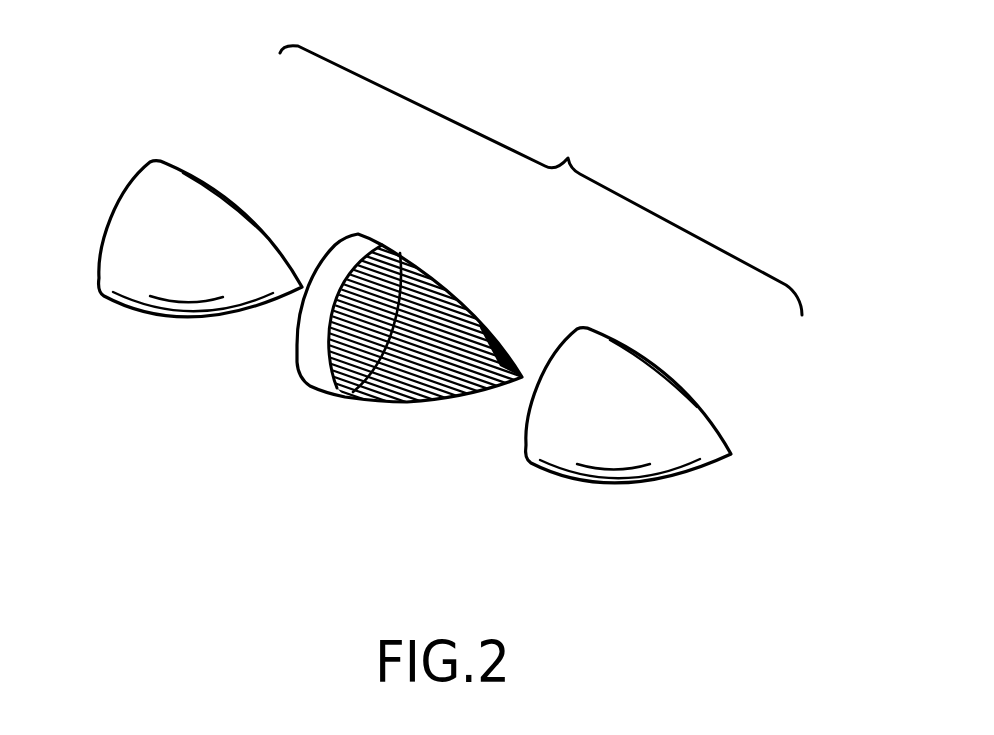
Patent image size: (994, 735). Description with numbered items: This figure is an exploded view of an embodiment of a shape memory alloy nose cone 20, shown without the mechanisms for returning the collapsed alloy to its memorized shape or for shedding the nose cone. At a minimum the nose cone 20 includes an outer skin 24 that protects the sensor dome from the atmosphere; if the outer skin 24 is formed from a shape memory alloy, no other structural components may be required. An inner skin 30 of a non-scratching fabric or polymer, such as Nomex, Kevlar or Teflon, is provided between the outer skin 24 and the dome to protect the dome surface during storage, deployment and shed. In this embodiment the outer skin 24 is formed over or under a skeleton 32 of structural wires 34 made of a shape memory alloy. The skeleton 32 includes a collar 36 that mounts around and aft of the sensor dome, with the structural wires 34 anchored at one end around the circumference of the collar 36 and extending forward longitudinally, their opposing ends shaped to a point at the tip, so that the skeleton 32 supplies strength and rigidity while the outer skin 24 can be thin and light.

The nose cone 20 is at (541, 180).
The outer skin 24 is at (667, 377).
The inner skin 30 is at (208, 194).
The skeleton 32 is at (316, 411).
The structural wires 34 is at (482, 290).
The collar 36 is at (405, 229).